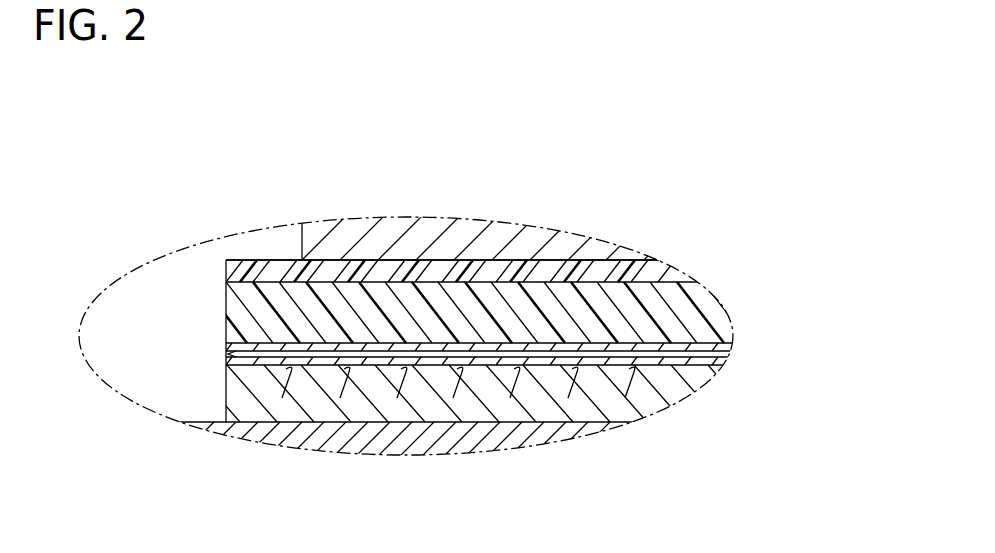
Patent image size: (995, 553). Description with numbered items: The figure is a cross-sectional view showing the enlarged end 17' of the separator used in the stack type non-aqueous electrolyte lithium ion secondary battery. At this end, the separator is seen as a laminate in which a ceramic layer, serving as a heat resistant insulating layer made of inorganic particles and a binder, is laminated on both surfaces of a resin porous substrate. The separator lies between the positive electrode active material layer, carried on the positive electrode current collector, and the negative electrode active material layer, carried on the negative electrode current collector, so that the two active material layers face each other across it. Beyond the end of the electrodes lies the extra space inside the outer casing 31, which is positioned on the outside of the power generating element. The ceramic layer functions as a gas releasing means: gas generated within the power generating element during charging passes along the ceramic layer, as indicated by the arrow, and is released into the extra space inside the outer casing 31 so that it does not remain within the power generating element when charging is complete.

The enlarged end of the separator 17' is at (422, 234).
The extra space inside the outer casing 31 is at (148, 313).